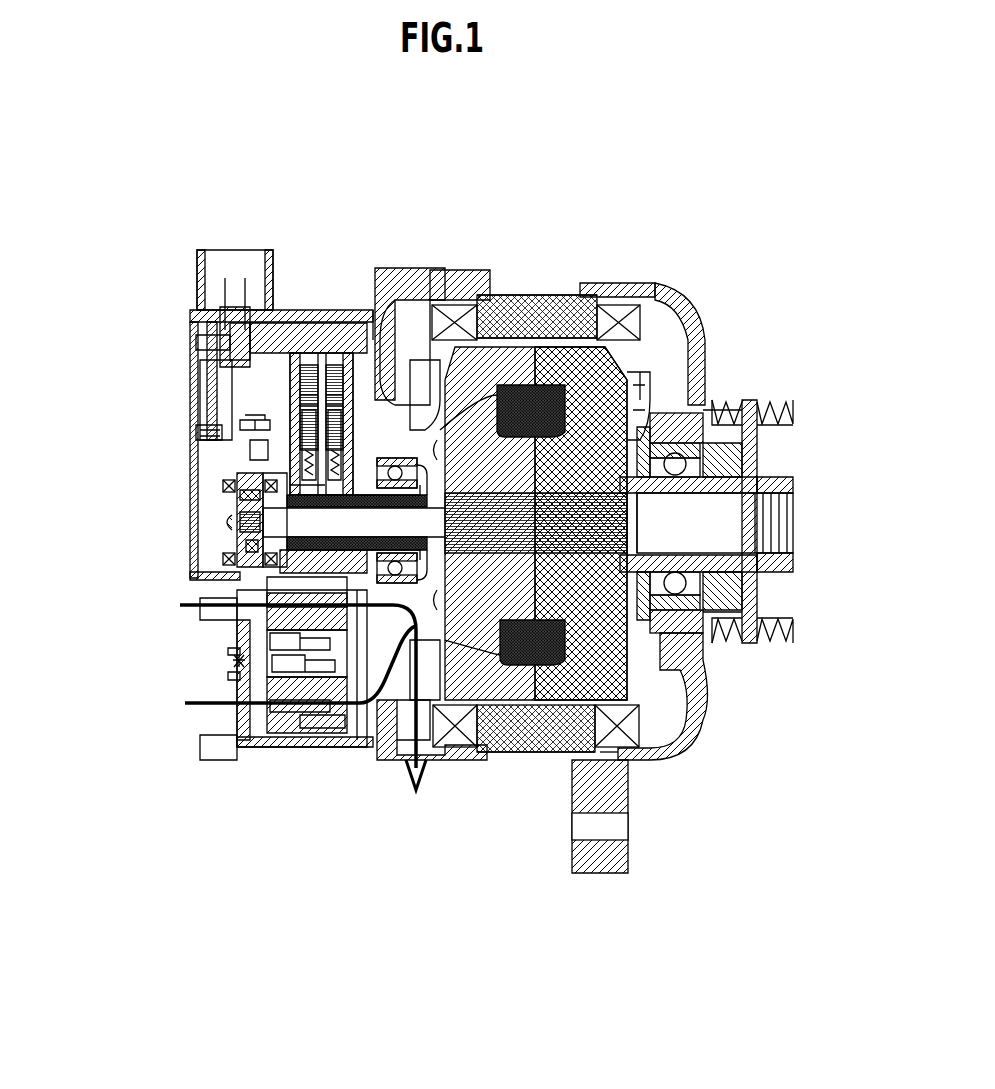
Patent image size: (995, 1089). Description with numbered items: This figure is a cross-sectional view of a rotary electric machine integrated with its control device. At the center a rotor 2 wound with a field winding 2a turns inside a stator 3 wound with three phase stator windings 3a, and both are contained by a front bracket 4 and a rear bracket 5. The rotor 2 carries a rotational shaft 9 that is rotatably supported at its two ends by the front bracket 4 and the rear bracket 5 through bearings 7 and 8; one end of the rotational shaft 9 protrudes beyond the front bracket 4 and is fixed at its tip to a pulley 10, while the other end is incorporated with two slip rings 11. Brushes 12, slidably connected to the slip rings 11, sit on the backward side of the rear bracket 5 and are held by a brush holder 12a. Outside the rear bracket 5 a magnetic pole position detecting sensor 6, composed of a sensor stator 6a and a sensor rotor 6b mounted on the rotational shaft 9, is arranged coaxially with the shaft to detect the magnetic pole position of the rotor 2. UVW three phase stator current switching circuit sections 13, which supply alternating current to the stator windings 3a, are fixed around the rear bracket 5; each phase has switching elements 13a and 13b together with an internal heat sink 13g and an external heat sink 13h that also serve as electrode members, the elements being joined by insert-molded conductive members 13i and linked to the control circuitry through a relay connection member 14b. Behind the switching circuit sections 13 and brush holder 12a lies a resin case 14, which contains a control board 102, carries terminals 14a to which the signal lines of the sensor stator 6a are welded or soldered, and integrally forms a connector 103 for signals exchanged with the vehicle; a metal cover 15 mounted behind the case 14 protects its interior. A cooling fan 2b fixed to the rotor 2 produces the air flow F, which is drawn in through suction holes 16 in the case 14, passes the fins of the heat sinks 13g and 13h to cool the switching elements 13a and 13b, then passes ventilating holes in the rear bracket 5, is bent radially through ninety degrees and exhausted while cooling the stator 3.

The rotor 2 is at (680, 740).
The field winding 2a is at (540, 760).
The cooling fan 2b is at (450, 755).
The stator 3 is at (540, 290).
The stator windings 3a is at (640, 320).
The front bracket 4 is at (690, 330).
The rear bracket 5 is at (430, 283).
The magnetic pole position detecting sensor 6 is at (60, 468).
The sensor stator 6a is at (225, 558).
The sensor rotor 6b is at (225, 486).
The bearing 7 is at (700, 440).
The bearing 8 is at (397, 735).
The rotational shaft 9 is at (735, 500).
The pulley 10 is at (760, 612).
The slip rings 11 is at (265, 572).
The brushes 12 is at (303, 330).
The brush holder 12a is at (312, 370).
The stator current switching circuit sections 13 is at (300, 752).
The switching element 13a is at (245, 680).
The switching element 13b is at (247, 735).
The internal heat sink 13g is at (237, 666).
The external heat sink 13h is at (280, 757).
The conductive members 13i is at (322, 750).
The case 14 is at (240, 622).
The terminals 14a is at (200, 432).
The relay connection member 14b is at (235, 704).
The metal cover 15 is at (190, 405).
The suction holes 16 is at (215, 605).
The control board 102 is at (215, 378).
The connector 103 is at (197, 262).